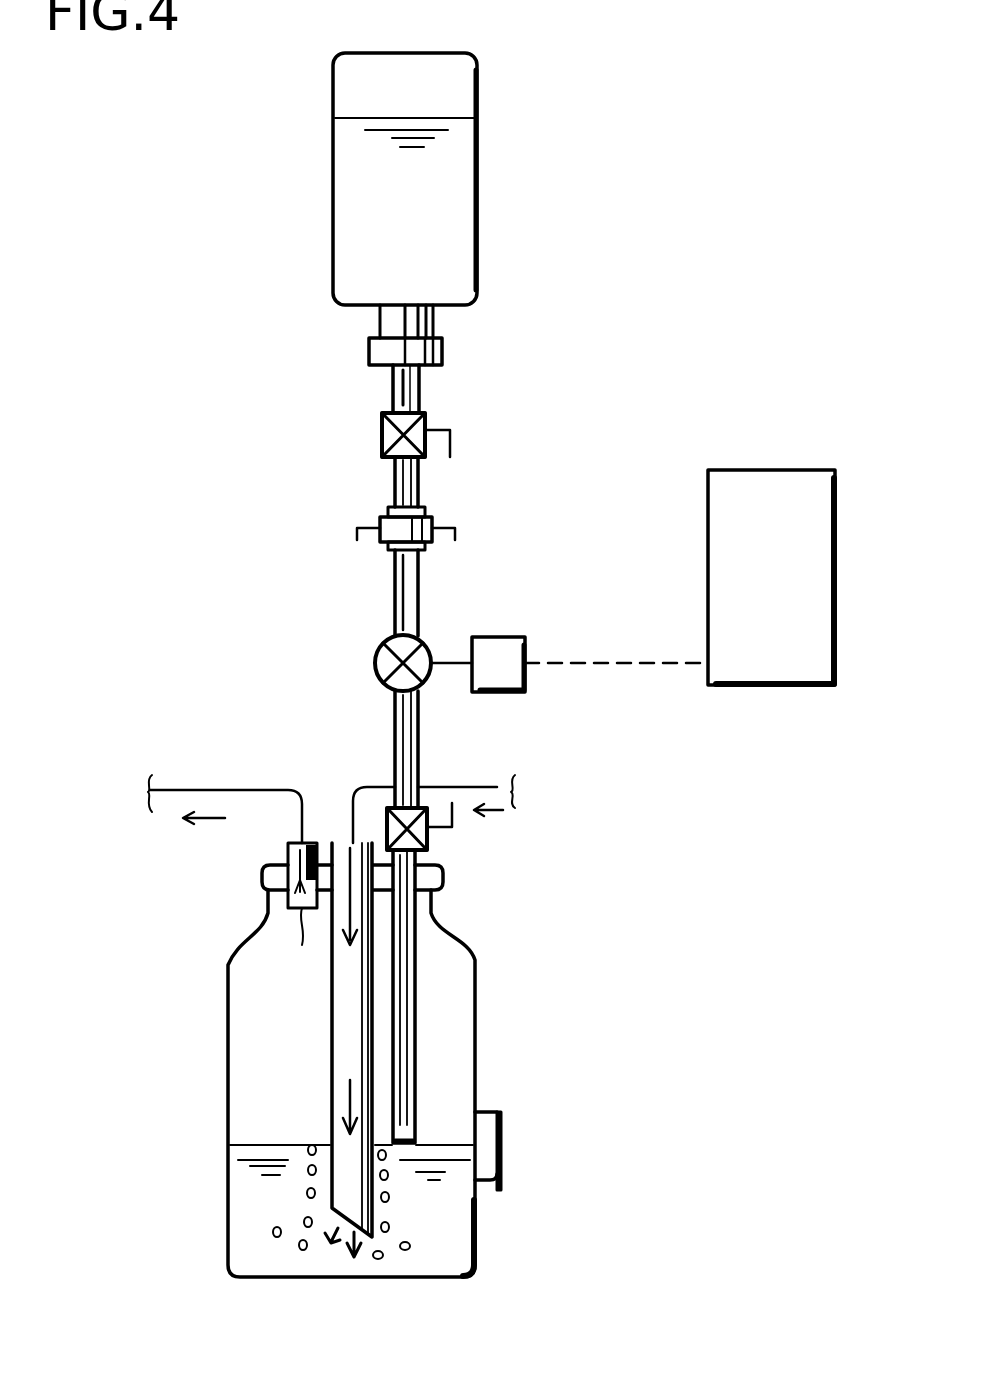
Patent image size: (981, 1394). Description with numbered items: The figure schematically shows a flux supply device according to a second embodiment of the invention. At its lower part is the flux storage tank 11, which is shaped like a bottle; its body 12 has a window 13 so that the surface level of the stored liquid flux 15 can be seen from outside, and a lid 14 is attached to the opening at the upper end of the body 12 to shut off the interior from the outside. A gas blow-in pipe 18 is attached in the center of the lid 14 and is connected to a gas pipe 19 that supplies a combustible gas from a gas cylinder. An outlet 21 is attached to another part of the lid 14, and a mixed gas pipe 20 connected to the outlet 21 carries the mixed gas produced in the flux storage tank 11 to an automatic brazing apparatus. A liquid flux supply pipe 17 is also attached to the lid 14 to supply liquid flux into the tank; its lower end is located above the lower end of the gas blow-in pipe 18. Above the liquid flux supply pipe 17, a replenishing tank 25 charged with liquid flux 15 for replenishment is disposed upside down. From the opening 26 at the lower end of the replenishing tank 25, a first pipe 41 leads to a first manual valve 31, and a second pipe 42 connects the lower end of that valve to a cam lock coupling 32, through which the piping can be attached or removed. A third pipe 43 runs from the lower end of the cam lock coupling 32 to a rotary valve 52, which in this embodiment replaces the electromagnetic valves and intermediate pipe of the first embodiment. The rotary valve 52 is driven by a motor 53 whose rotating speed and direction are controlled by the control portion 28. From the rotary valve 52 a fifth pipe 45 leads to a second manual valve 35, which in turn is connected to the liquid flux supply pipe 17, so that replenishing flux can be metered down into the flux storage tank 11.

The flux storage tank 11 is at (361, 1060).
The body 12 is at (475, 1018).
The window 13 is at (500, 1160).
The lid 14 is at (443, 877).
The liquid flux 15 is at (428, 227).
The liquid flux supply pipe 17 is at (417, 1058).
The gas blow-in pipe 18 is at (330, 1010).
The gas pipe 19 is at (497, 787).
The mixed gas pipe 20 is at (212, 790).
The outlet 21 is at (287, 847).
The replenishing tank 25 is at (477, 90).
The opening 26 is at (442, 357).
The control portion 28 is at (765, 470).
The first manual valve 31 is at (425, 420).
The cam lock coupling 32 is at (432, 512).
The second manual valve 35 is at (427, 838).
The first pipe 41 is at (393, 393).
The second pipe 42 is at (395, 483).
The third pipe 43 is at (395, 572).
The fifth pipe 45 is at (395, 778).
The rotary valve 52 is at (376, 658).
The motor 53 is at (505, 637).